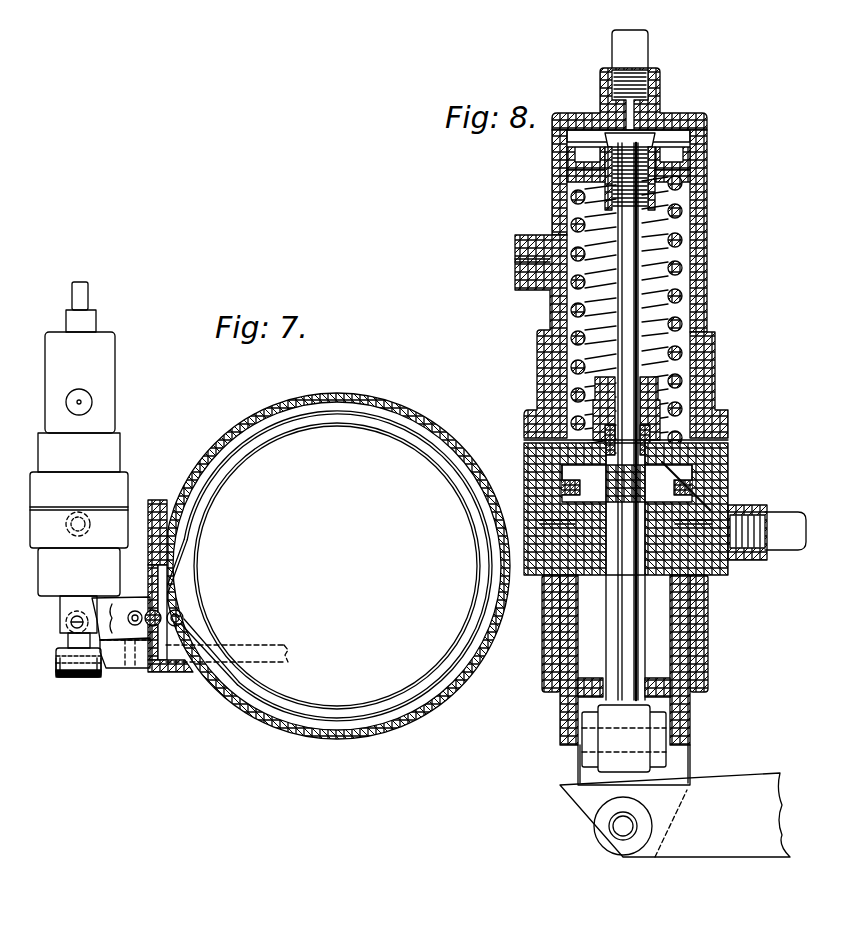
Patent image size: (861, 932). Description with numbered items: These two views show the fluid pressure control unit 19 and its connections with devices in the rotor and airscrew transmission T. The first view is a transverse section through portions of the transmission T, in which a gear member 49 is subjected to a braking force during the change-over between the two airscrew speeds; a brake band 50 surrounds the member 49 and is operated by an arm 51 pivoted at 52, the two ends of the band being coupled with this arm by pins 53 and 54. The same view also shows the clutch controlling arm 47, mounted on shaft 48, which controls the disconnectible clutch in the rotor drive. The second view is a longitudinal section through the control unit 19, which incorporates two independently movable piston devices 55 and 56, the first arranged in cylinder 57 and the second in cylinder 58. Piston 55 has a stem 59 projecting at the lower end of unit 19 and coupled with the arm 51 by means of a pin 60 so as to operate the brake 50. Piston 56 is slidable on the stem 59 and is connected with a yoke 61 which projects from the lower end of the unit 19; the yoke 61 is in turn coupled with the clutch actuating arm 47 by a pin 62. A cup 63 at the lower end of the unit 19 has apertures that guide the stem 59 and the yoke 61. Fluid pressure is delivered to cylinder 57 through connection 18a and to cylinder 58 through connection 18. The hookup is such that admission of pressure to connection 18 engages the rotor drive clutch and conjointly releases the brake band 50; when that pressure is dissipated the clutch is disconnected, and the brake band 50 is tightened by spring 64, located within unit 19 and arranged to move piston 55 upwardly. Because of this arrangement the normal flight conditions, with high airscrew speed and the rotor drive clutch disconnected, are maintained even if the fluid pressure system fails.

In FIG. 7, the transmission T is at (356, 388).
In FIG. 7, the connection 18 is at (81, 513).
In FIG. 8, the connection 18 is at (782, 520).
In FIG. 7, the connection 18a is at (88, 292).
In FIG. 8, the connection 18a is at (640, 52).
In FIG. 7, the control unit 19 is at (123, 427).
In FIG. 8, the control unit 19 is at (531, 359).
In FIG. 7, the clutch controlling arm 47 is at (109, 668).
In FIG. 8, the clutch controlling arm 47 is at (720, 845).
In FIG. 7, the shaft 48 is at (272, 644).
In FIG. 7, the gear member 49 is at (196, 624).
In FIG. 7, the brake band 50 is at (215, 672).
In FIG. 7, the arm 51 is at (122, 602).
In FIG. 8, the arm 51 is at (590, 765).
In FIG. 7, the pivot 52 is at (160, 614).
In FIG. 7, the pin 53 is at (182, 616).
In FIG. 7, the pin 54 is at (137, 642).
In FIG. 8, the piston 55 is at (680, 166).
In FIG. 8, the piston 56 is at (690, 482).
In FIG. 7, the cylinder 57 is at (108, 366).
In FIG. 8, the cylinder 57 is at (700, 184).
In FIG. 8, the cylinder 58 is at (700, 487).
In FIG. 8, the stem 59 is at (630, 292).
In FIG. 7, the pin 60 is at (66, 622).
In FIG. 8, the pin 60 is at (650, 780).
In FIG. 8, the yoke 61 is at (680, 603).
In FIG. 7, the pin 62 is at (70, 678).
In FIG. 8, the pin 62 is at (622, 828).
In FIG. 7, the cup 63 is at (40, 578).
In FIG. 8, the cup 63 is at (541, 661).
In FIG. 8, the spring 64 is at (672, 328).